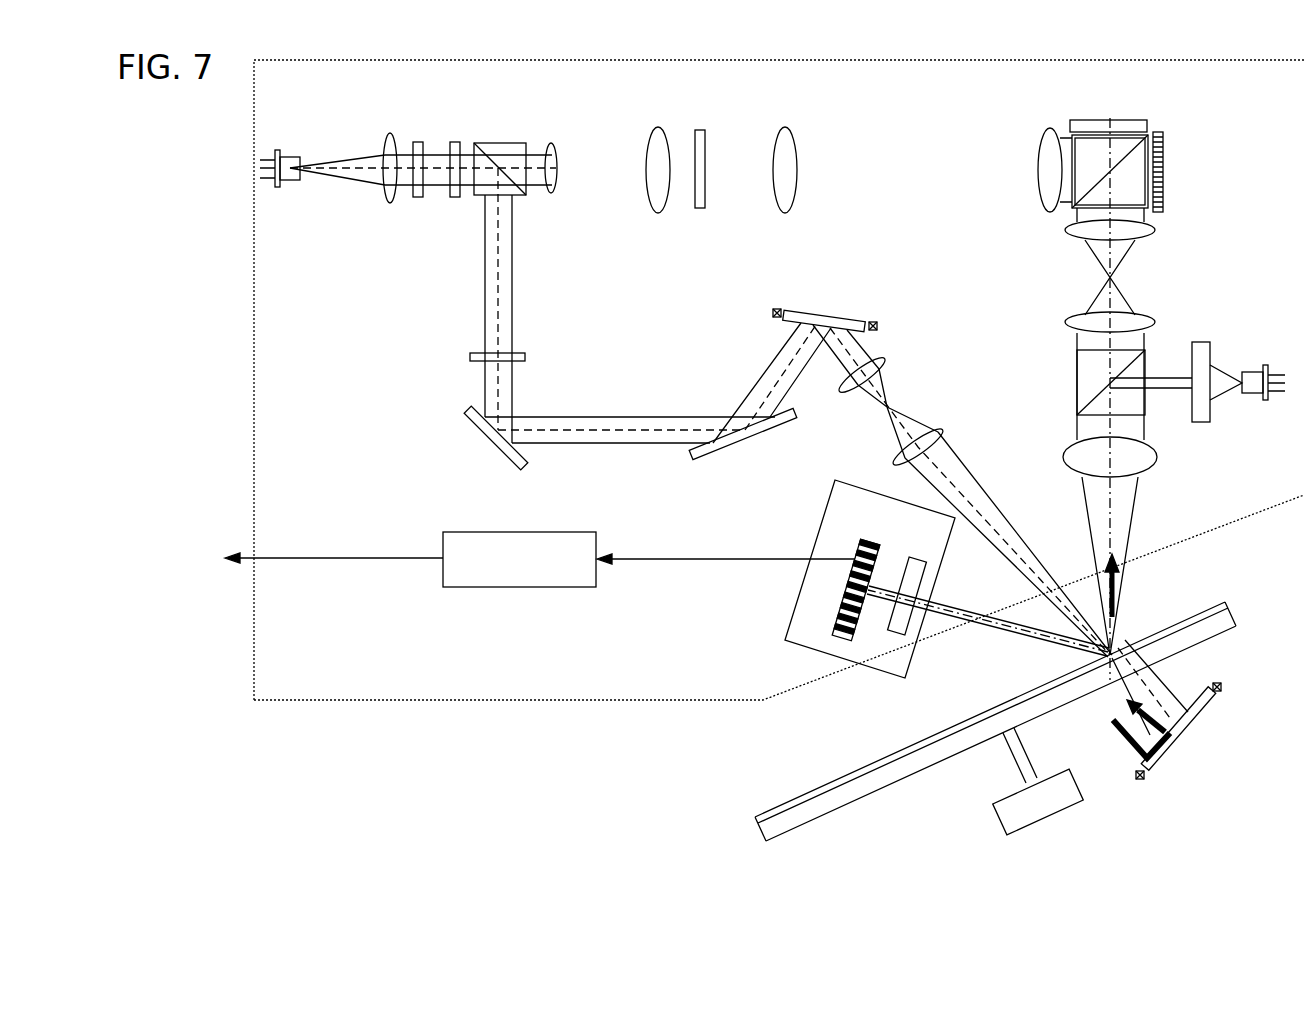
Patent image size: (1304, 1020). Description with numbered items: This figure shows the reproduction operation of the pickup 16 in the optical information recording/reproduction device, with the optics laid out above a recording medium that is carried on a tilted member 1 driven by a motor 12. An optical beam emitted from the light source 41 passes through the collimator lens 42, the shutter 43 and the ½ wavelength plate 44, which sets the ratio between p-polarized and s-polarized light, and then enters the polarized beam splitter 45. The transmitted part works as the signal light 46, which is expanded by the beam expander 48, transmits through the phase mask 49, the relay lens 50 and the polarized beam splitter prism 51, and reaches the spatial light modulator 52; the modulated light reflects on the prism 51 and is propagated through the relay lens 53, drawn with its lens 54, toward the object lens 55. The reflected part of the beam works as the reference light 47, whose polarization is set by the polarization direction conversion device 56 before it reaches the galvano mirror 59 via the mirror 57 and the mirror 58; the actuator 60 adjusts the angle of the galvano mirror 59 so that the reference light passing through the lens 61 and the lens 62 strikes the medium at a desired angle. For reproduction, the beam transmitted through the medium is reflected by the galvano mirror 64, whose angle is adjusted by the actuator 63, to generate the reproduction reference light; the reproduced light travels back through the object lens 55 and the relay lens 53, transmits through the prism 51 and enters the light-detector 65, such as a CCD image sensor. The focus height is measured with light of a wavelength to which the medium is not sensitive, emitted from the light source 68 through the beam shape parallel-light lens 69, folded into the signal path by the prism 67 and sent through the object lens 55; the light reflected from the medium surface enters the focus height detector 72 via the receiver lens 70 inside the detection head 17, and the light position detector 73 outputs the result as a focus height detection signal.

The workpiece 1 is at (1240, 600).
The motor 12 is at (997, 814).
The pickup 16 is at (305, 703).
The light position detection head 17 is at (785, 641).
The light source 41 is at (291, 155).
The collimator lens 42 is at (392, 134).
The shutter 43 is at (418, 142).
The ½ wavelength plate 44 is at (455, 142).
The polarized beam splitter 45 is at (474, 193).
The signal light 46 is at (731, 151).
The reference light 47 is at (512, 224).
The beam expander 48 is at (655, 119).
The phase mask 49 is at (699, 210).
The relay lens 50 is at (793, 119).
The polarized beam splitter prism 51 is at (1083, 155).
The spatial light modulator 52 is at (1164, 186).
The relay lens 53 is at (1058, 223).
The lens 54 is at (1156, 234).
The object lens 55 is at (1158, 462).
The polarization direction conversion device 56 is at (470, 356).
The mirror 57 is at (490, 448).
The mirror 58 is at (695, 460).
The galvano mirror 59 is at (852, 311).
The actuator 60 is at (880, 321).
The lens 61 is at (890, 362).
The lens 62 is at (930, 430).
The actuator 63 is at (1223, 686).
The galvano mirror 64 is at (1186, 748).
The light-detector 65 is at (1125, 120).
The prism 67 is at (1077, 373).
The light source 68 is at (1270, 365).
The beam shape parallel-light lens 69 is at (1212, 359).
The receiver lens 70 is at (925, 559).
The focus height detector 72 is at (864, 541).
The light position detector 73 is at (566, 532).